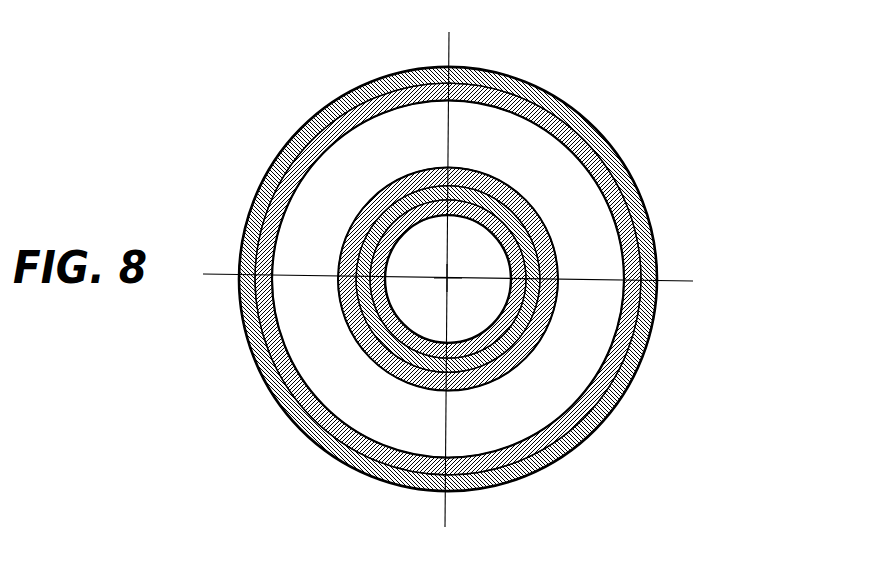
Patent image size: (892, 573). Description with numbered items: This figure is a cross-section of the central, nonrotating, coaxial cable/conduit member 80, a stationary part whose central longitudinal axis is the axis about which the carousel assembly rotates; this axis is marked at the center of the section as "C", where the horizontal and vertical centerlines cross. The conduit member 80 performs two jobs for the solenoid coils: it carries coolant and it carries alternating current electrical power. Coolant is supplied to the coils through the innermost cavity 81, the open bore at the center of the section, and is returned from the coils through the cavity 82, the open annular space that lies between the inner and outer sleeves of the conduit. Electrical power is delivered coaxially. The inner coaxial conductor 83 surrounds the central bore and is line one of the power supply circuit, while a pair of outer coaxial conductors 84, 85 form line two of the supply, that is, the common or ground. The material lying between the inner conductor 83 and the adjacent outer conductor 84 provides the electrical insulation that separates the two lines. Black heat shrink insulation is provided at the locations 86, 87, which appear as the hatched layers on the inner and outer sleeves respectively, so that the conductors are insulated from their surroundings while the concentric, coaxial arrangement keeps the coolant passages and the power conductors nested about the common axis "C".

The conduit member 80 is at (582, 66).
The cavity 81 is at (483, 302).
The cavity 82 is at (312, 328).
The inner coaxial conductor 83 is at (512, 373).
The outer coaxial conductor 84 is at (407, 387).
The outer coaxial conductor 85 is at (293, 422).
The heat shrink insulation location 86 is at (527, 200).
The heat shrink insulation location 87 is at (654, 233).
The center axis C is at (444, 272).